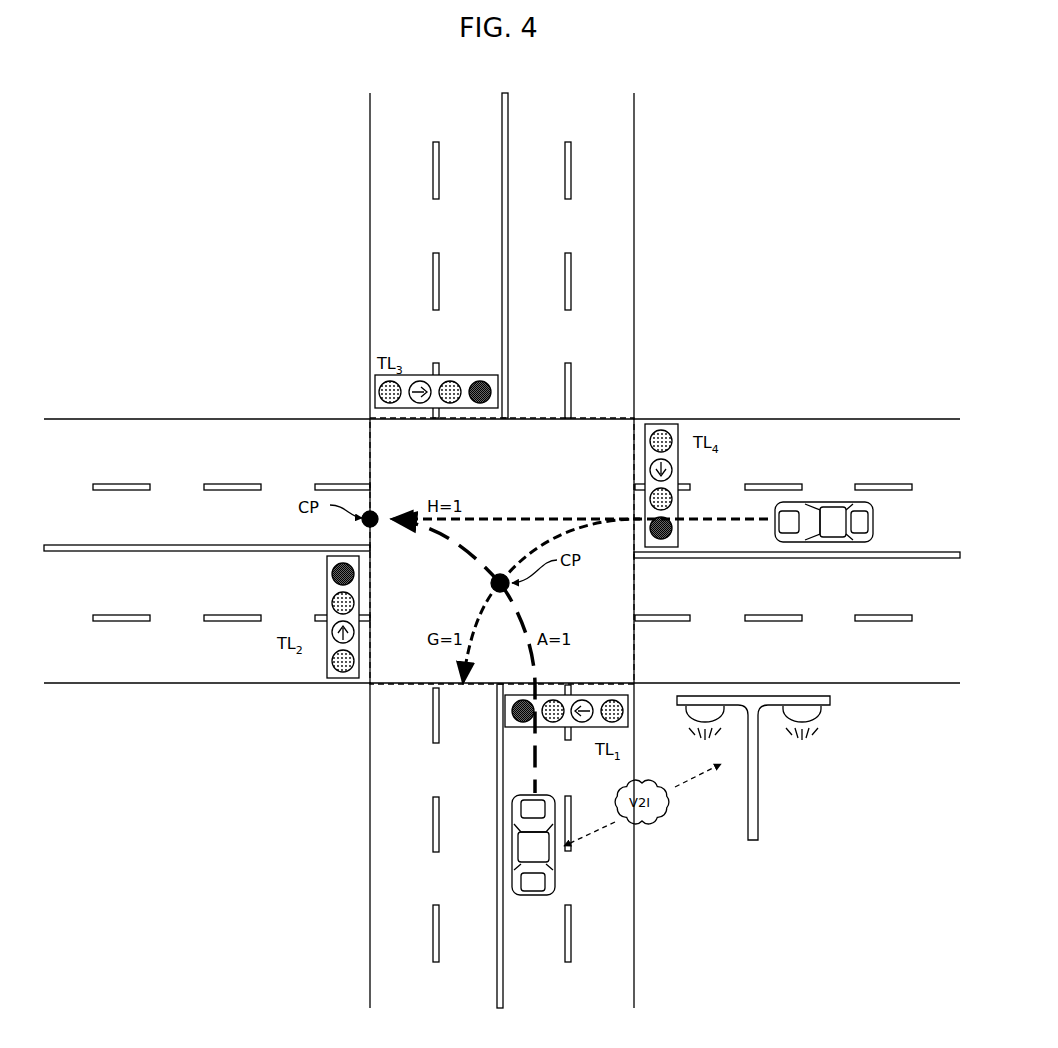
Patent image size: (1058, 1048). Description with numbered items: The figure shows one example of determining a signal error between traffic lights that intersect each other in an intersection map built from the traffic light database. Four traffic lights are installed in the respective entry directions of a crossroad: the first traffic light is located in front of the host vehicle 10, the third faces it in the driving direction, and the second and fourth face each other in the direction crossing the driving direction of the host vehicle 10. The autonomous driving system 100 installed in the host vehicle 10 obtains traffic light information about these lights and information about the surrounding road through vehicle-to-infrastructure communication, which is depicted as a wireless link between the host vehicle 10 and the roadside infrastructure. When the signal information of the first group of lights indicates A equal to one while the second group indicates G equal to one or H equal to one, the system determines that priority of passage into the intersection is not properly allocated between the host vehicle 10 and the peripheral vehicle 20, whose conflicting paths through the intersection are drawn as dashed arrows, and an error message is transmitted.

The host vehicle 10 is at (548, 843).
The peripheral vehicle 20 is at (823, 497).
The autonomous driving system 100 is at (822, 764).